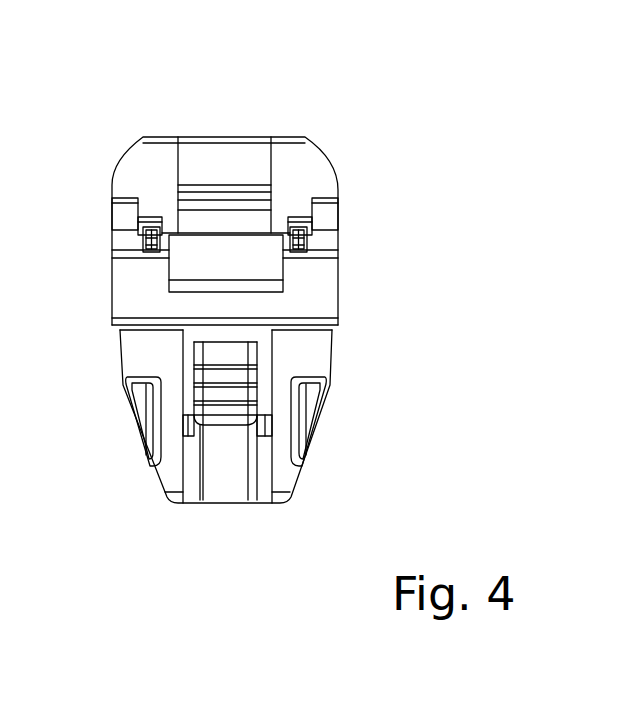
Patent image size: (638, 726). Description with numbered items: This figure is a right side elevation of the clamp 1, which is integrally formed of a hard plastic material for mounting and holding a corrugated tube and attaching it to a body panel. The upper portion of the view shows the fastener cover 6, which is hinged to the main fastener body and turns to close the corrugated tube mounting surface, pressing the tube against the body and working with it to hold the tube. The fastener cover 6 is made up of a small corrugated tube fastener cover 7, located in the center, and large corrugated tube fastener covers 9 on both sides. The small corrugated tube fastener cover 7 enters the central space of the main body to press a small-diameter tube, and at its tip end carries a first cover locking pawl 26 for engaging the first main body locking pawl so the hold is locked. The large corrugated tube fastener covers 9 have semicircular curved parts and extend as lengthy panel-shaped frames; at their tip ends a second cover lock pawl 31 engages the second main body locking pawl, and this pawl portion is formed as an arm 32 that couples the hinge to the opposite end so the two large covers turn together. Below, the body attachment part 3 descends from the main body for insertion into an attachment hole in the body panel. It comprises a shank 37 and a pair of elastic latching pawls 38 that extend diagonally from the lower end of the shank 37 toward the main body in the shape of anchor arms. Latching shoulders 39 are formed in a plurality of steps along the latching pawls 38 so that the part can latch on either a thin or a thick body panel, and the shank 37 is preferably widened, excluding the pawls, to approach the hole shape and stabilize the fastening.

The clamp 1 is at (416, 125).
The body attachment part 3 is at (143, 461).
The fastener cover 6 is at (420, 140).
The small corrugated tube fastener cover 7 is at (257, 167).
The large corrugated tube fastener cover 9 is at (318, 281).
The first cover locking pawl 26 is at (210, 202).
The second cover lock pawl 31 is at (190, 300).
The arm 32 is at (240, 306).
The shank 37 is at (165, 407).
The elastic latching pawl 38 is at (227, 420).
The latching shoulder 39 is at (223, 365).